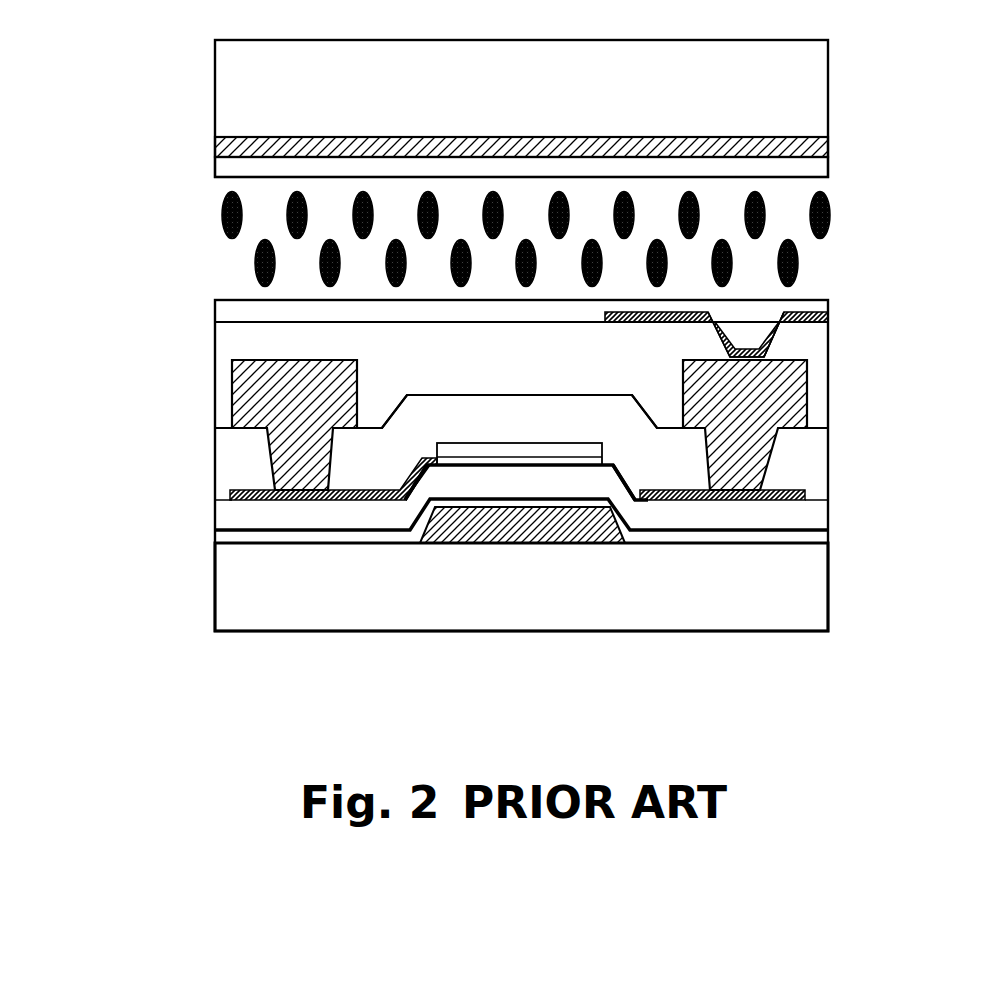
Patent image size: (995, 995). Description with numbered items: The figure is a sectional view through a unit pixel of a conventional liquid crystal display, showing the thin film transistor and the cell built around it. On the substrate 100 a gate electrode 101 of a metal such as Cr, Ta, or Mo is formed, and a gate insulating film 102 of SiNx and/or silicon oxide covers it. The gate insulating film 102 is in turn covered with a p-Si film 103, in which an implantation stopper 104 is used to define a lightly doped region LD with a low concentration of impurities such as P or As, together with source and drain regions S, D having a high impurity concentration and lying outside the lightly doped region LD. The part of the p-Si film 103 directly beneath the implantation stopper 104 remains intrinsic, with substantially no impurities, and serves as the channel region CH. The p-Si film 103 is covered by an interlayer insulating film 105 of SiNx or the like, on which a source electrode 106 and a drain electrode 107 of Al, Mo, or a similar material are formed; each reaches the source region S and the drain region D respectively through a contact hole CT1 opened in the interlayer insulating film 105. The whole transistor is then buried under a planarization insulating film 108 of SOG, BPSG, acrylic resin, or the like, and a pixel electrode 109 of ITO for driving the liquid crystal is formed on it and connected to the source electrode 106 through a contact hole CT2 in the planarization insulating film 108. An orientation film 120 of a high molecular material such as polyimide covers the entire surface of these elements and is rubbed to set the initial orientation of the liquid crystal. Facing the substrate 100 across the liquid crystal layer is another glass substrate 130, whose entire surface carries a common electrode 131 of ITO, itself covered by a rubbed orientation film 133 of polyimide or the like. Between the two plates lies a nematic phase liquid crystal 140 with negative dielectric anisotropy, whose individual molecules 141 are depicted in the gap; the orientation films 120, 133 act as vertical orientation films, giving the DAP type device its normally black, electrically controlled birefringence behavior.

The substrate 100 is at (815, 588).
The gate electrode 101 is at (553, 545).
The gate insulating film 102 is at (260, 522).
The p-Si film 103 is at (805, 495).
The implantation stopper 104 is at (437, 458).
The interlayer insulating film 105 is at (505, 458).
The source electrode 106 is at (806, 358).
The drain electrode 107 is at (382, 428).
The planarization insulating film 108 is at (800, 350).
The pixel electrode 109 is at (700, 310).
The orientation film 120 is at (225, 305).
The glass substrate 130 is at (460, 108).
The common electrode 131 is at (222, 138).
The orientation film 133 is at (222, 165).
The nematic phase liquid crystal 140 is at (473, 233).
The liquid crystal molecule 141 is at (225, 213).
The channel region CH is at (430, 463).
The contact hole CT1 is at (268, 455).
The contact hole CT2 is at (735, 302).
The drain region D is at (230, 497).
The source region S is at (760, 503).
The lightly doped region LD is at (390, 498).